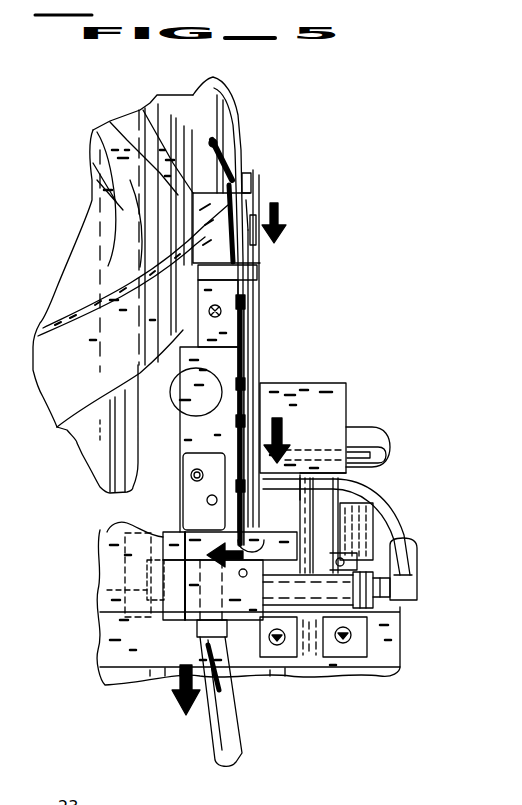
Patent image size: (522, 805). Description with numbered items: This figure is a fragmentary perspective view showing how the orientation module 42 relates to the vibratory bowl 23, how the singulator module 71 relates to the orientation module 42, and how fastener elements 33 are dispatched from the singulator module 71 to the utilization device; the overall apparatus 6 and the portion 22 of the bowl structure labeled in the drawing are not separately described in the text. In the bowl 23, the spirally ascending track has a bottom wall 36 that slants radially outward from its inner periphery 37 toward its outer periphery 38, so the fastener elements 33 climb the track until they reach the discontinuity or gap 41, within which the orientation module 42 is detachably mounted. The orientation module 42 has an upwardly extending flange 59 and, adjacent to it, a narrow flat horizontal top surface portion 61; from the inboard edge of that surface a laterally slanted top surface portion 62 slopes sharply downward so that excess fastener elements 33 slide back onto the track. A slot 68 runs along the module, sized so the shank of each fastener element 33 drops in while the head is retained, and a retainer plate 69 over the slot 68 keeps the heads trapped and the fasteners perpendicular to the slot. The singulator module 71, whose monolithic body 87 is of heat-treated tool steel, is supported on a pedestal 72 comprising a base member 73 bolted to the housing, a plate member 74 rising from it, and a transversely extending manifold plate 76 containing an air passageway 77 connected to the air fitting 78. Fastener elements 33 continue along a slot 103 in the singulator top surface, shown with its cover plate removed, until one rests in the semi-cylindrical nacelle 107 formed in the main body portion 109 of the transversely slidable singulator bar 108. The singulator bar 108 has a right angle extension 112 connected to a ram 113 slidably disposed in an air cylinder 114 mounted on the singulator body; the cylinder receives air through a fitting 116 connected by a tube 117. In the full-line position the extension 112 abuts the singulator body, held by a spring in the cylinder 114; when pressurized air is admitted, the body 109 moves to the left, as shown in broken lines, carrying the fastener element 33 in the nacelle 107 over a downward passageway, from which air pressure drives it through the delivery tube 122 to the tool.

The apparatus 6 is at (309, 333).
The handle tube 22 is at (86, 441).
The bowl 23 is at (34, 376).
The fastener elements 33 is at (213, 148).
The bottom wall of the track 36 is at (143, 176).
The inner periphery 37 is at (137, 240).
The outer periphery 38 is at (100, 127).
The discontinuity or gap 41 is at (237, 150).
The orientation module 42 is at (264, 181).
The upwardly extending flange 59 is at (260, 187).
The flat horizontal top surface portion 61 is at (223, 190).
The laterally slanted top surface portion 62 is at (215, 238).
The slot 68 is at (253, 223).
The retainer plate 69 is at (225, 301).
The singulator module 71 is at (170, 430).
The pedestal 72 is at (376, 520).
The base member 73 is at (354, 640).
The plate member 74 is at (333, 483).
The manifold plate 76 is at (335, 400).
The air passageway 77 is at (307, 445).
The air fitting 78 is at (383, 450).
The monolithic body 87 is at (175, 374).
The slot 103 is at (240, 444).
The semi-cylindrical nacelle 107 is at (273, 533).
The singulator bar 108 is at (135, 572).
The main body portion 109 is at (127, 523).
The right angle extension 112 is at (110, 615).
The ram 113 is at (112, 588).
The air cylinder 114 is at (320, 596).
The fitting 116 is at (397, 562).
The tube 117 is at (397, 520).
The delivery tube 122 is at (238, 723).